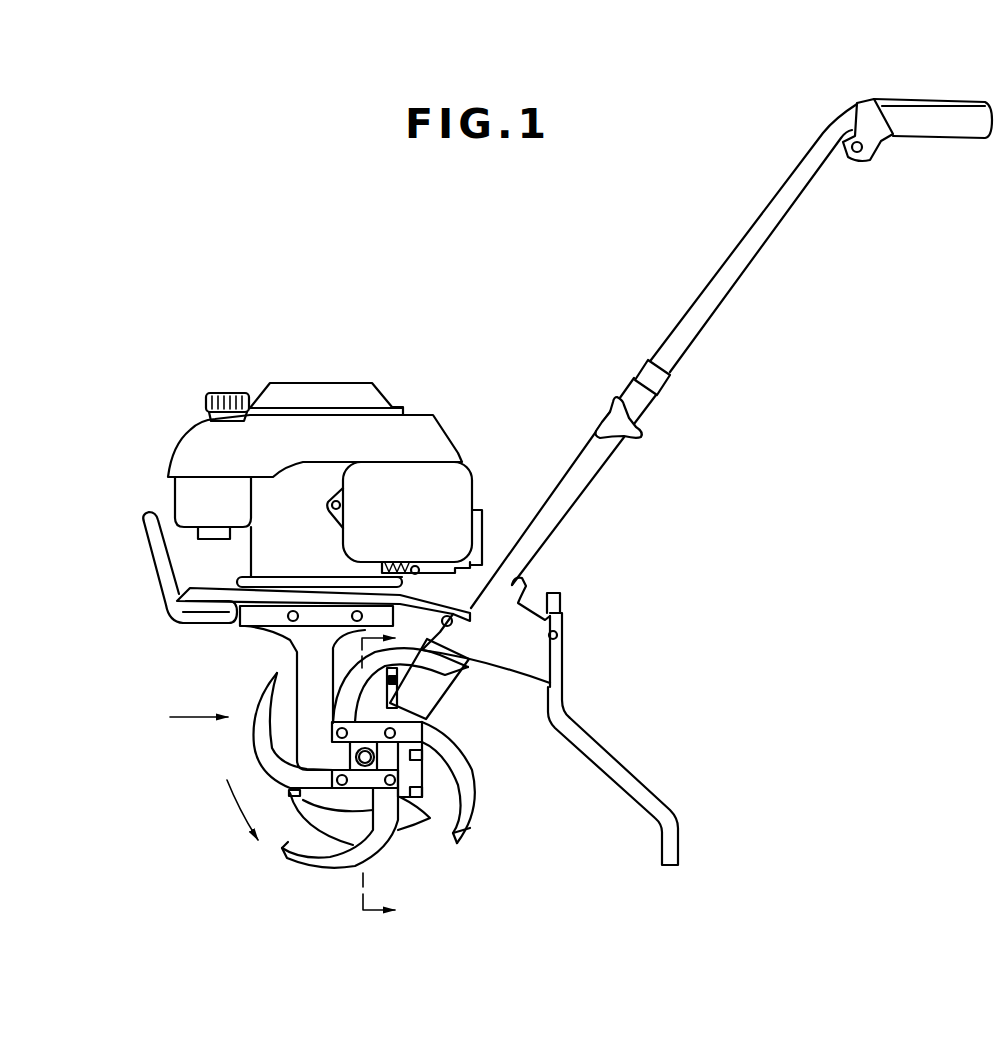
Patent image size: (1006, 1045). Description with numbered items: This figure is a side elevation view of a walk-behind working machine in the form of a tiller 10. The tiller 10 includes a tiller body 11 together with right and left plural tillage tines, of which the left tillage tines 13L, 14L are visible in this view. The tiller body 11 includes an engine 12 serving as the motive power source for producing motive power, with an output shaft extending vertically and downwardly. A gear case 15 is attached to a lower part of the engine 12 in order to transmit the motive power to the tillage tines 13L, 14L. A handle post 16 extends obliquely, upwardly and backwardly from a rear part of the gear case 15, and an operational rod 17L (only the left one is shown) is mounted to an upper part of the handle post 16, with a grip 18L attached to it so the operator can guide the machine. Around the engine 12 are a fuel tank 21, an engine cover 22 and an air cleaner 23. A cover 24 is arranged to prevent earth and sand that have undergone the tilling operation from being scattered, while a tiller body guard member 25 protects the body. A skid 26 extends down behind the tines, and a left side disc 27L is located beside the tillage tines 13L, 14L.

The tiller 10 is at (290, 236).
The tiller body 11 is at (394, 371).
The engine 12 is at (267, 558).
The tillage tine 13L is at (253, 750).
The tillage tine 14L is at (281, 860).
The gear case 15 is at (293, 650).
The handle post 16 is at (576, 460).
The operational rod 17L is at (766, 204).
The grip 18L is at (943, 120).
The fuel tank 21 is at (176, 490).
The engine cover 22 is at (190, 431).
The air cleaner 23 is at (475, 480).
The cover 24 is at (163, 578).
The tiller body guard member 25 is at (183, 625).
The skid 26 is at (636, 781).
The side disc 27L is at (430, 820).